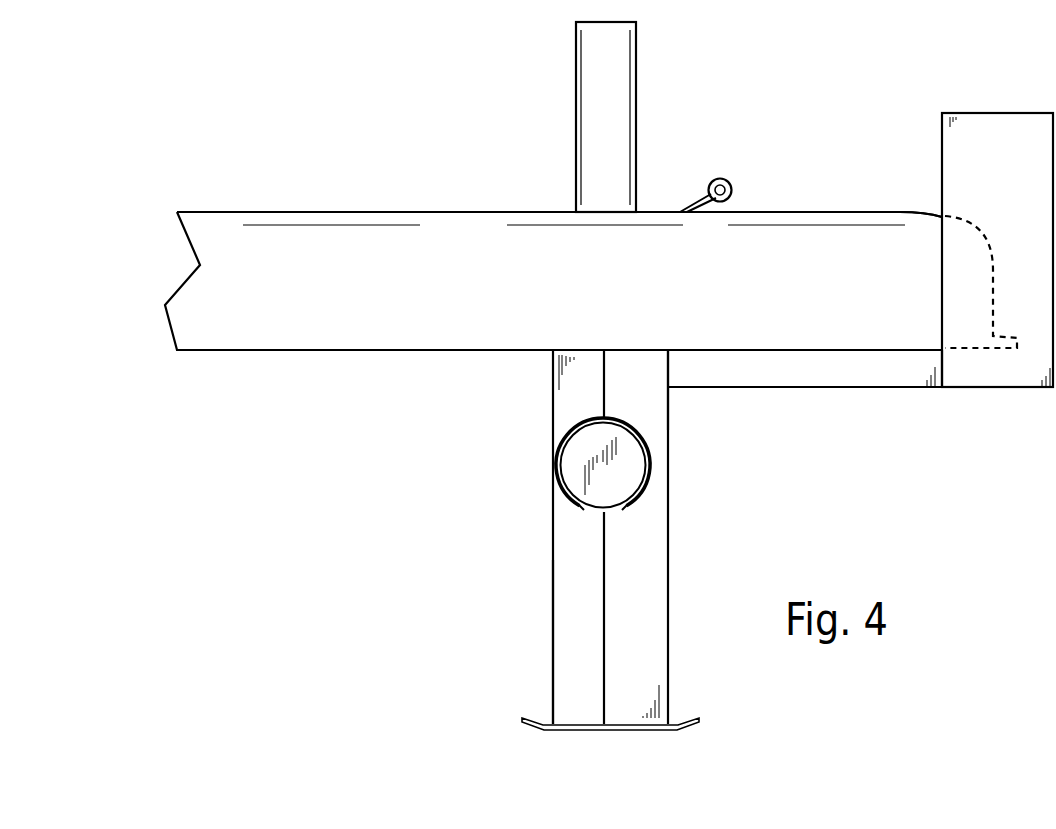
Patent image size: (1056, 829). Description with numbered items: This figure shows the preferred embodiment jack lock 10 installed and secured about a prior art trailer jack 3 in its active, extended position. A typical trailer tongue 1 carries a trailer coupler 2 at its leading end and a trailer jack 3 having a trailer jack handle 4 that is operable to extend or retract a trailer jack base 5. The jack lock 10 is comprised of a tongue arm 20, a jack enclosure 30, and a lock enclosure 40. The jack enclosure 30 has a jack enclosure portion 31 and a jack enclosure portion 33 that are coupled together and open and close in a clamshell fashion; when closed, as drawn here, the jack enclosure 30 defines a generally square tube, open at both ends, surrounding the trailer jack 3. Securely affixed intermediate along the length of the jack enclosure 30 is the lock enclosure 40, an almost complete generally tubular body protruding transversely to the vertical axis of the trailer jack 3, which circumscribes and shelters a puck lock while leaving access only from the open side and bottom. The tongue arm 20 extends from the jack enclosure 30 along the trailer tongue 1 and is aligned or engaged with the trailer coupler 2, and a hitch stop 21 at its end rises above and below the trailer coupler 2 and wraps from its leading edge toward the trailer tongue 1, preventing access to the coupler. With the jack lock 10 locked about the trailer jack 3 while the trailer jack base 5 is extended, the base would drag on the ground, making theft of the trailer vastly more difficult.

The trailer tongue 1 is at (415, 207).
The trailer coupler 2 is at (891, 207).
The trailer jack 3 is at (642, 94).
The trailer jack handle 4 is at (721, 178).
The trailer jack base 5 is at (688, 727).
The jack lock 10 is at (515, 418).
The tongue arm 20 is at (917, 394).
The hitch stop 21 is at (948, 158).
The jack enclosure 30 is at (552, 662).
The jack enclosure portion 31 is at (565, 636).
The jack enclosure portion 33 is at (651, 399).
The lock enclosure 40 is at (549, 527).